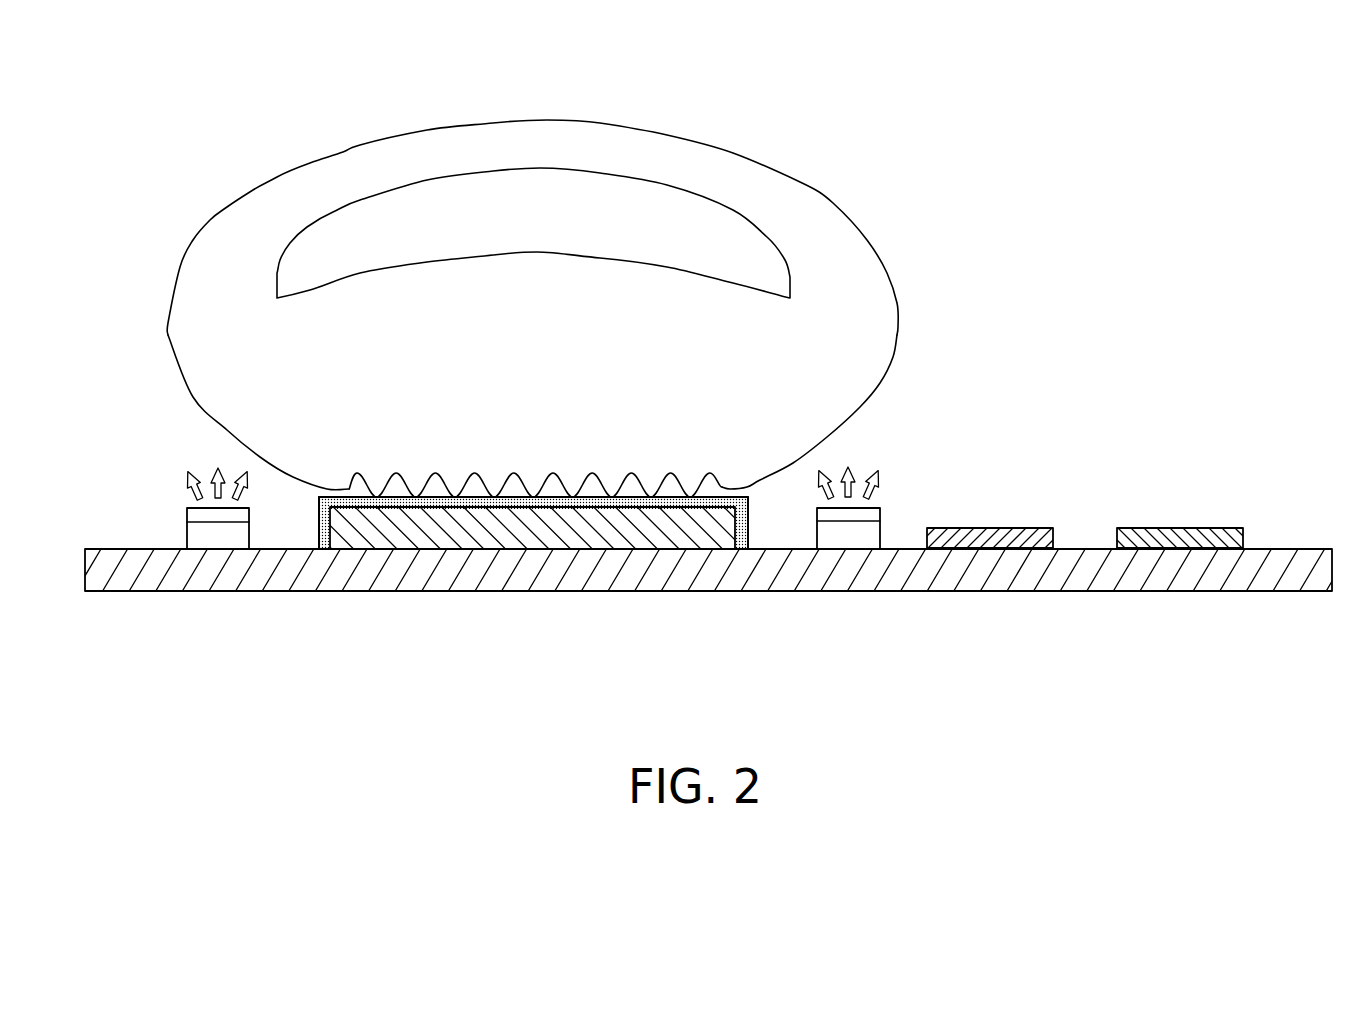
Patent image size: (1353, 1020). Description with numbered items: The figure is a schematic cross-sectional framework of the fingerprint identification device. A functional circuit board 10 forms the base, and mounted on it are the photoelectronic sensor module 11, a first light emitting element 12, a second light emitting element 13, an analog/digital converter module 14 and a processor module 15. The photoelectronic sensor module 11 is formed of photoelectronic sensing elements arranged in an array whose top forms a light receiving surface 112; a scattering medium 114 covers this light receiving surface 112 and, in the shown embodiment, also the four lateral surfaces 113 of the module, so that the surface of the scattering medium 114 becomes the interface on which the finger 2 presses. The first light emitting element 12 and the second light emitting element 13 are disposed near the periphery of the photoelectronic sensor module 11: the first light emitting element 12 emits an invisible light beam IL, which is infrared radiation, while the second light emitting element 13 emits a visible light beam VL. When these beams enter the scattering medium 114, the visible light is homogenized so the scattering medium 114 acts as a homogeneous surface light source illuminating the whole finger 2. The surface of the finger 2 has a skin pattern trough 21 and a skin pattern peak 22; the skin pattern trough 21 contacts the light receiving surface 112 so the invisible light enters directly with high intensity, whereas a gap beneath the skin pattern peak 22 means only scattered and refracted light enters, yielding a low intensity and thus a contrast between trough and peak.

The finger 2 is at (790, 203).
The skin pattern trough 21 is at (373, 493).
The skin pattern peak 22 is at (478, 475).
The functional circuit board 10 is at (417, 577).
The photoelectronic sensor module 11 is at (655, 533).
The light receiving surface 112 is at (712, 507).
The lateral surfaces 113 is at (327, 529).
The scattering medium 114 is at (487, 503).
The first light emitting element 12 is at (200, 538).
The second light emitting element 13 is at (858, 540).
The analog/digital converter module 14 is at (1030, 528).
The processor module 15 is at (1178, 536).
The invisible light beam IL is at (205, 479).
The visible light beam VL is at (866, 478).